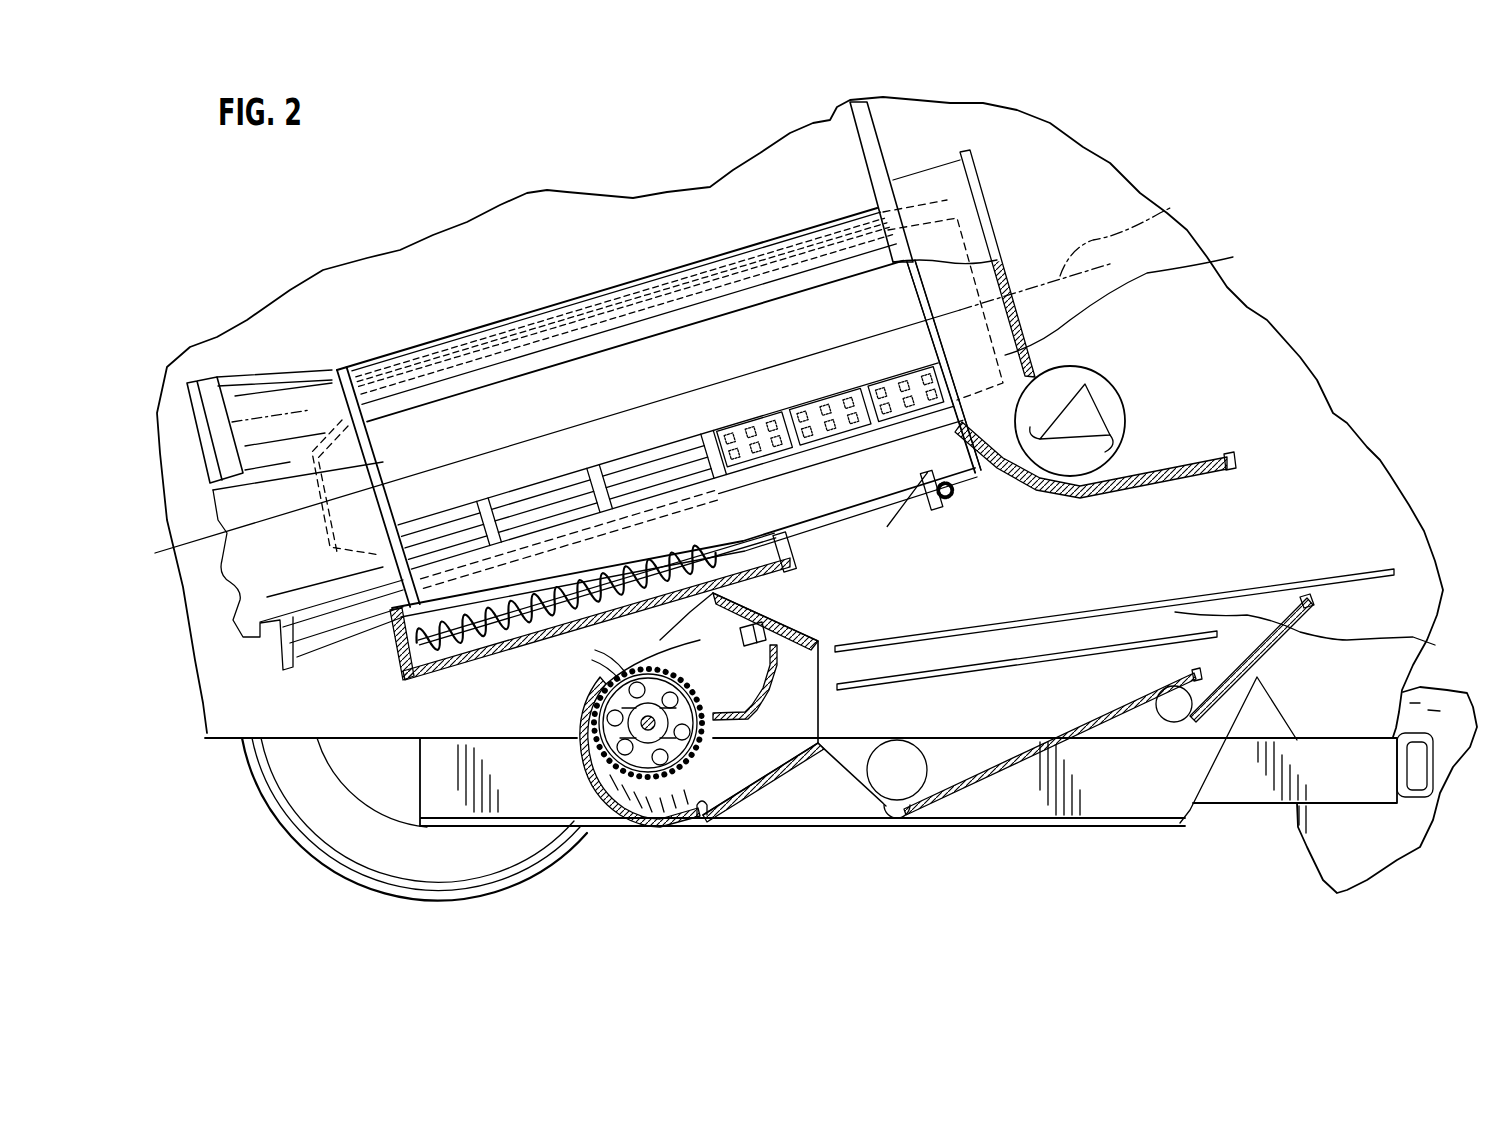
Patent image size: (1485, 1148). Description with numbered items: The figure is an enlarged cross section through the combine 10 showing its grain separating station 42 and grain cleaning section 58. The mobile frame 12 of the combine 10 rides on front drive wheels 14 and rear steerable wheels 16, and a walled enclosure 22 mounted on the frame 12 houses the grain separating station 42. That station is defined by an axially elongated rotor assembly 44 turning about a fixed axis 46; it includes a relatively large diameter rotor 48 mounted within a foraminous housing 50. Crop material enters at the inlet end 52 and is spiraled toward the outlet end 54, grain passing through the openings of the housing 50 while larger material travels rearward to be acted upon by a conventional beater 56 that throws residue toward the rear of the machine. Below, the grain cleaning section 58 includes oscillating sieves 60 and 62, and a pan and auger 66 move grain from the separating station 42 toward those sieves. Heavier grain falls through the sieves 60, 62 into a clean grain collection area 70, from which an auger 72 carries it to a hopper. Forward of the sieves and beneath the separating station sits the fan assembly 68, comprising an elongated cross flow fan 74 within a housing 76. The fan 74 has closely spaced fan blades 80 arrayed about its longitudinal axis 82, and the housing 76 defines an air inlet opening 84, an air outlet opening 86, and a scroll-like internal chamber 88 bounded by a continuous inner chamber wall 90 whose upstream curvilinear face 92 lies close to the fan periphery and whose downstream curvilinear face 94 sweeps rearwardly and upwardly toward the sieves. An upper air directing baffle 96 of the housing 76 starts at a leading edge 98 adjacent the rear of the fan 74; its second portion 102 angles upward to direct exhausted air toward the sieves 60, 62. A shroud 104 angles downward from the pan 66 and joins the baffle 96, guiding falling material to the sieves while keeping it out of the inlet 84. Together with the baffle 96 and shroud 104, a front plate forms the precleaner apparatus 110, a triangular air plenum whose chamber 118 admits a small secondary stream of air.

The combine 10 is at (393, 242).
The mobile frame 12 is at (1245, 792).
The front drive wheels 14 is at (313, 812).
The rear steerable wheels 16 is at (1323, 852).
The walled enclosure 22 is at (1083, 170).
The grain separating station 42 is at (567, 286).
The rotor assembly 44 is at (375, 366).
The fixed axis 46 is at (1170, 208).
The rotor 48 is at (697, 273).
The foraminous housing 50 is at (830, 125).
The inlet end 52 is at (193, 410).
The outlet end 54 is at (1116, 263).
The beater 56 is at (1123, 392).
The grain cleaning section 58 is at (1070, 576).
The sieve 60 is at (1392, 565).
The sieve 62 is at (1324, 640).
The pan and auger 66 is at (384, 650).
The fan assembly 68 is at (589, 683).
The clean grain collection area 70 is at (910, 830).
The auger 72 is at (917, 780).
The cross flow fan 74 is at (638, 666).
The housing 76 is at (667, 828).
The fan blades 80 is at (595, 657).
The longitudinal axis 82 is at (643, 742).
The air inlet opening 84 is at (689, 669).
The air outlet opening 86 is at (823, 680).
The internal chamber 88 is at (650, 800).
The inner chamber wall 90 is at (703, 810).
The upstream curvilinear face 92 is at (593, 700).
The downstream curvilinear face 94 is at (797, 753).
The upper air directing baffle 96 is at (730, 706).
The leading edge 98 is at (717, 735).
The second portion 102 is at (780, 685).
The shroud 104 is at (750, 593).
The precleaner apparatus 110 is at (806, 618).
The chamber 118 is at (800, 640).